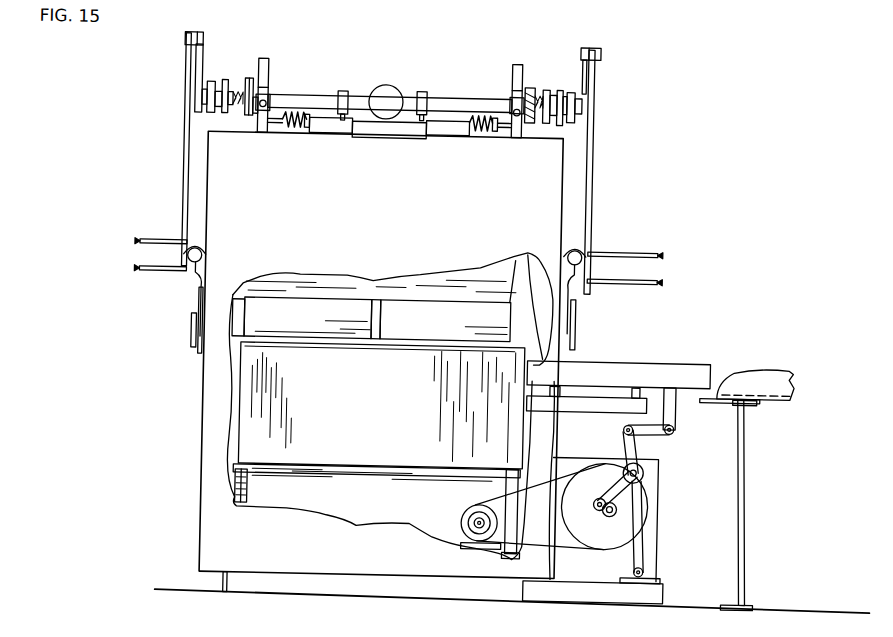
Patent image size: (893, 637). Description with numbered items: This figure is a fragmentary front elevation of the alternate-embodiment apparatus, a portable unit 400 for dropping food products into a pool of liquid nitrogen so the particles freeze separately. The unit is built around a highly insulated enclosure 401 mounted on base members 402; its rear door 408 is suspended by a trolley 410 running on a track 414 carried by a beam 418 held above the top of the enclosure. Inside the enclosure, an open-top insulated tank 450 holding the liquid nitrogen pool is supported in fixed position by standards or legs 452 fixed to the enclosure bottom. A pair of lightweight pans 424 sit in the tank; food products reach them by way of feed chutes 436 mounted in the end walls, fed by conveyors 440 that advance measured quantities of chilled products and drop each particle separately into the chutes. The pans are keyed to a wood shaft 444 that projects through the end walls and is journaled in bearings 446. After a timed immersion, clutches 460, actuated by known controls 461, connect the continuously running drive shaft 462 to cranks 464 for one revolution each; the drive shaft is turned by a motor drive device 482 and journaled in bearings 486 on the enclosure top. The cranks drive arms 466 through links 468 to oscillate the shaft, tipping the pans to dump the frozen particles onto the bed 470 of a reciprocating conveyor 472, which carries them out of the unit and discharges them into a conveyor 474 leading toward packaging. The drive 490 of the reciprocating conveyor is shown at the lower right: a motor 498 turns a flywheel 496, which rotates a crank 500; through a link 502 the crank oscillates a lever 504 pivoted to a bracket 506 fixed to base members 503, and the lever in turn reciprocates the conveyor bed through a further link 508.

The portable unit 400 is at (629, 37).
The insulated enclosure 401 is at (571, 146).
The base members 402 is at (516, 594).
The rear door 408 is at (387, 219).
The trolley 410 is at (265, 106).
The track 414 is at (268, 90).
The beams 418 is at (262, 65).
The pans 424 is at (427, 298).
The feed chutes 436 is at (530, 258).
The conveyors 440 is at (154, 244).
The wood shaft 444 is at (203, 312).
The bearings 446 is at (200, 334).
The insulated tank 450 is at (379, 412).
The standards or legs 452 is at (241, 484).
The clutches 460 is at (221, 53).
The controls 461 is at (325, 132).
The drive shaft 462 is at (432, 98).
The cranks 464 is at (190, 82).
The arms 466 is at (197, 286).
The links 468 is at (187, 148).
The conveyor bed 470 is at (651, 358).
The reciprocating conveyor 472 is at (711, 351).
The conveyor 474 is at (763, 372).
The motor drive device 482 is at (383, 120).
The bearings 486 is at (345, 94).
The drive 490 is at (671, 540).
The flywheel 496 is at (663, 515).
The motor 498 is at (472, 516).
The crank 500 is at (611, 500).
The link 502 is at (648, 492).
The base members 503 is at (651, 600).
The lever 504 is at (648, 482).
The bracket 506 is at (661, 570).
The link 508 is at (665, 434).